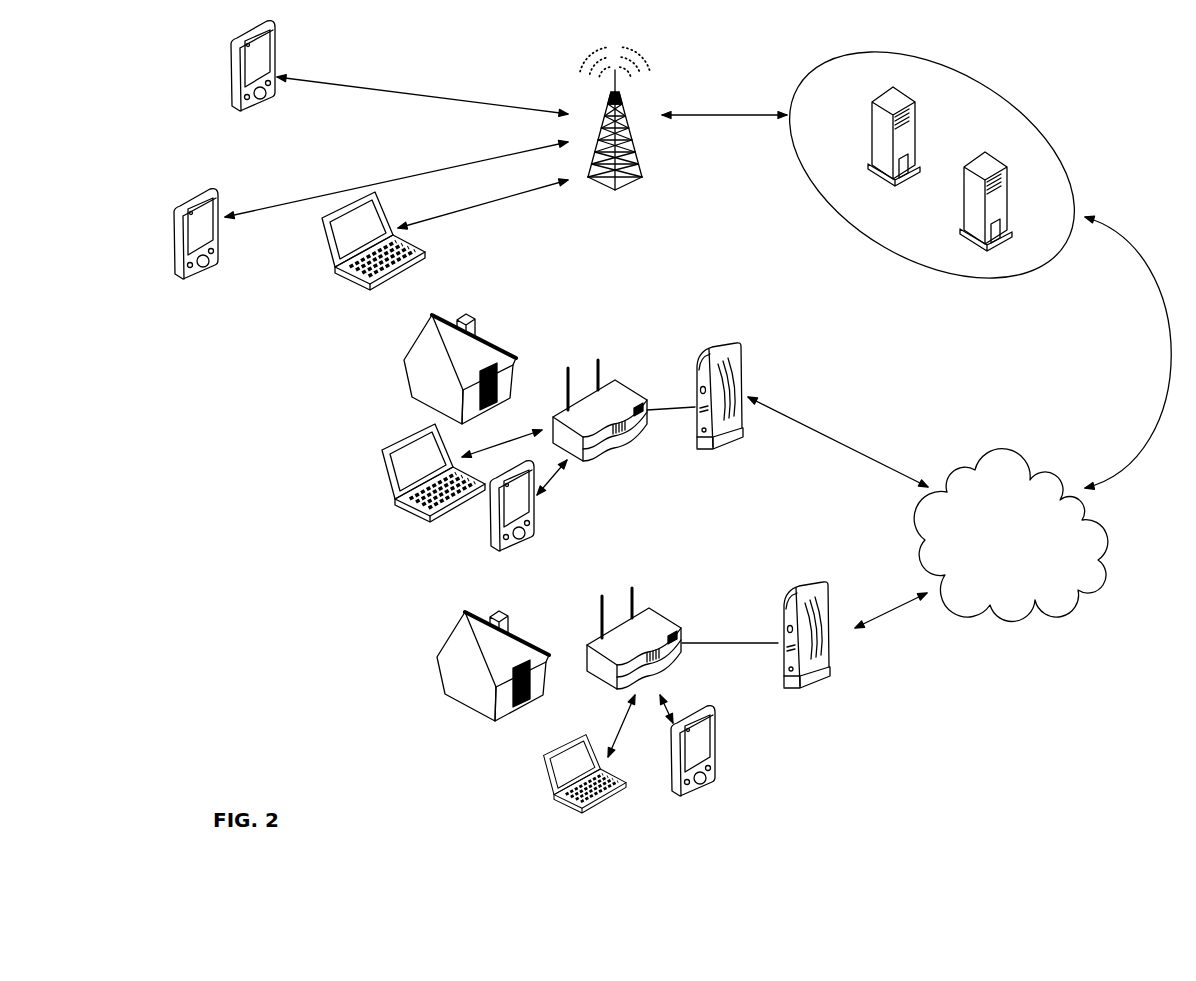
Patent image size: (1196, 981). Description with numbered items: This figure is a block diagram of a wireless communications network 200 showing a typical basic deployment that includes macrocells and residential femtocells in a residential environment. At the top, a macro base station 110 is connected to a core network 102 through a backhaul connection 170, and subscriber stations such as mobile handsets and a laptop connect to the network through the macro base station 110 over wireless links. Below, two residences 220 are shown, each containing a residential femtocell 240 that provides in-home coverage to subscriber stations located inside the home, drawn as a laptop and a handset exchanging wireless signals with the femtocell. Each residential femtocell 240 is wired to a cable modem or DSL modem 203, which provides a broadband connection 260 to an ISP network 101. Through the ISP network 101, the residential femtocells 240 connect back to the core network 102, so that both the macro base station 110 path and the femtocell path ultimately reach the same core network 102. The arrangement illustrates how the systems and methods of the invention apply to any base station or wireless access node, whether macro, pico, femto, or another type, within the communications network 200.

The macro base station 110 is at (635, 102).
The backhaul connection 170 is at (748, 122).
The core network 102 is at (1020, 118).
The residence 220 is at (410, 378).
The residential femtocell 240 is at (615, 368).
The DSL modem 203 is at (748, 360).
The broadband connection 260 is at (892, 605).
The ISP network 101 is at (1097, 588).
The communications network 200 is at (983, 778).